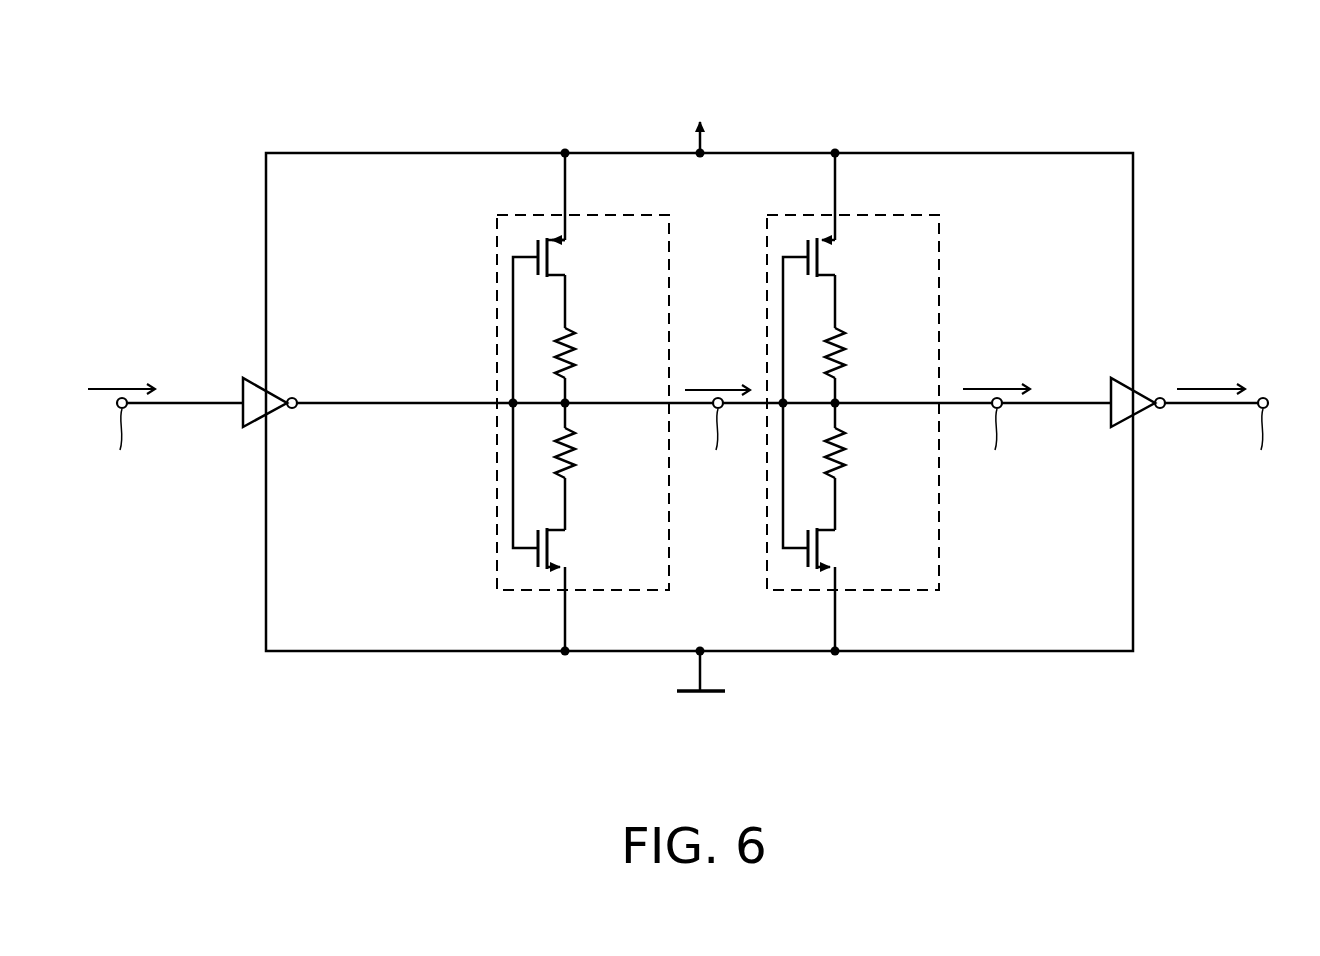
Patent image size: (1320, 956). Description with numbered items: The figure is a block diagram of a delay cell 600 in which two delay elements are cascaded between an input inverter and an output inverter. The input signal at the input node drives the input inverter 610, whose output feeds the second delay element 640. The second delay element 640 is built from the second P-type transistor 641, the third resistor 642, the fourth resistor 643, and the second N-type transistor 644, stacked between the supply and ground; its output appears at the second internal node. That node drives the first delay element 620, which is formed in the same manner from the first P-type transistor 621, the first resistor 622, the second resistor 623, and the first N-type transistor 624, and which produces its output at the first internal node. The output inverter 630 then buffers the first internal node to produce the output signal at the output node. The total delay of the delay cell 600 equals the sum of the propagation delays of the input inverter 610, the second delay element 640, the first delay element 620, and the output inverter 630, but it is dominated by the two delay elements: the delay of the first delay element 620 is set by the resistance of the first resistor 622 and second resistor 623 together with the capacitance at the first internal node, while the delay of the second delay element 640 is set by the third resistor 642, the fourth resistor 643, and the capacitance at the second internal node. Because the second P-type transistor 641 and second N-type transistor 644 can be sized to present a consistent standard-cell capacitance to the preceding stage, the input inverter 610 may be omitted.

The delay cell 600 is at (688, 419).
The input inverter 610 is at (245, 421).
The first delay element 620 is at (909, 214).
The first P-type transistor 621 is at (828, 258).
The first resistor 622 is at (845, 349).
The second resistor 623 is at (845, 451).
The first N-type transistor 624 is at (828, 551).
The output inverter 630 is at (1112, 421).
The second delay element 640 is at (639, 214).
The second P-type transistor 641 is at (558, 258).
The third resistor 642 is at (575, 349).
The fourth resistor 643 is at (575, 451).
The second N-type transistor 644 is at (558, 551).